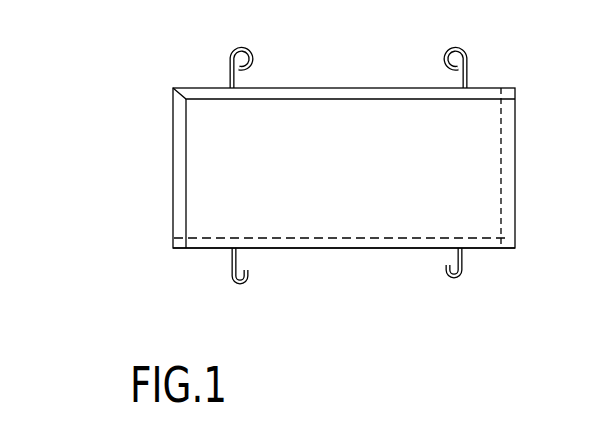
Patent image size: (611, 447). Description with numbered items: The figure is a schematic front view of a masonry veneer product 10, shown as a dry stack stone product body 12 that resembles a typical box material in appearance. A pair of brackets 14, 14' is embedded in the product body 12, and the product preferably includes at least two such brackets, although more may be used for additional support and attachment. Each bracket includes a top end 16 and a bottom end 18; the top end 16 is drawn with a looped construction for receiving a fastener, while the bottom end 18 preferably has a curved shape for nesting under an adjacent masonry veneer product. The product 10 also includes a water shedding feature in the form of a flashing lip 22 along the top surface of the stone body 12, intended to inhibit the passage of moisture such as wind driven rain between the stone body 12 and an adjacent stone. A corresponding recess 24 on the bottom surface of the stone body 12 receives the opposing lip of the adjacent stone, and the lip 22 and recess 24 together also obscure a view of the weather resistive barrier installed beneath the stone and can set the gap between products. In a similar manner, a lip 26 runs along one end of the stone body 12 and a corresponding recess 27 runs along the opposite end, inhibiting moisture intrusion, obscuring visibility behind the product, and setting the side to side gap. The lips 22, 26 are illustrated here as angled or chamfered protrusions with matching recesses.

The masonry veneer product 10 is at (346, 220).
The product body 12 is at (410, 277).
The bracket 14 is at (220, 291).
The bracket 14' is at (478, 286).
The top end 16 is at (462, 50).
The bottom end 18 is at (246, 273).
The flashing lip 22 is at (285, 97).
The recess 24 is at (200, 252).
The lip 26 is at (173, 157).
The recess 27 is at (502, 161).